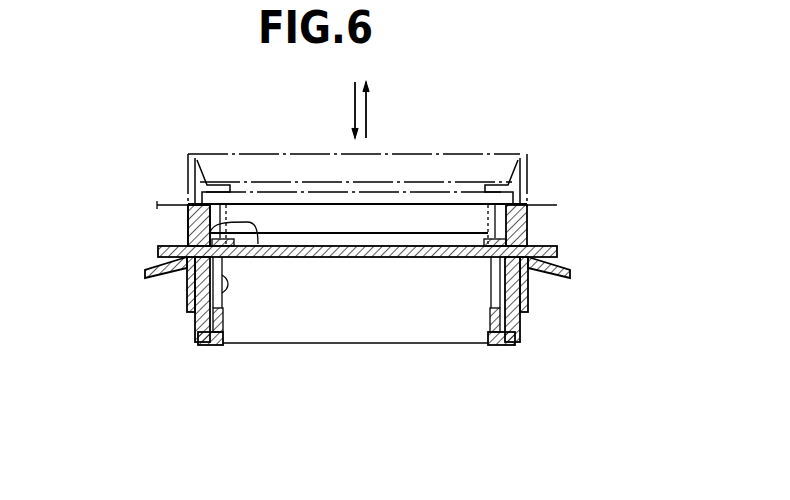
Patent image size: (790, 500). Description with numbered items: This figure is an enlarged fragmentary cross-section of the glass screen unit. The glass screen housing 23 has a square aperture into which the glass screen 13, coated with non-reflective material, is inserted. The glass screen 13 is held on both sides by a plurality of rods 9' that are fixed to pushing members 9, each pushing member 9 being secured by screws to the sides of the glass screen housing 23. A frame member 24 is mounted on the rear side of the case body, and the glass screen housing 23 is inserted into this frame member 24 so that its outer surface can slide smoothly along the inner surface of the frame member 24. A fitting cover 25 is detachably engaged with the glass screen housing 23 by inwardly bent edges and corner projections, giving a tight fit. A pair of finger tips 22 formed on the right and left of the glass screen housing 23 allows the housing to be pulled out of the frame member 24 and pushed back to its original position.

The glass screen 13 is at (187, 222).
The pushing member 9 is at (356, 325).
The rod 9' is at (325, 324).
The fitting cover 25 is at (527, 167).
The finger tip 22 is at (527, 194).
The frame member 24 is at (570, 275).
The glass screen housing 23 is at (517, 321).